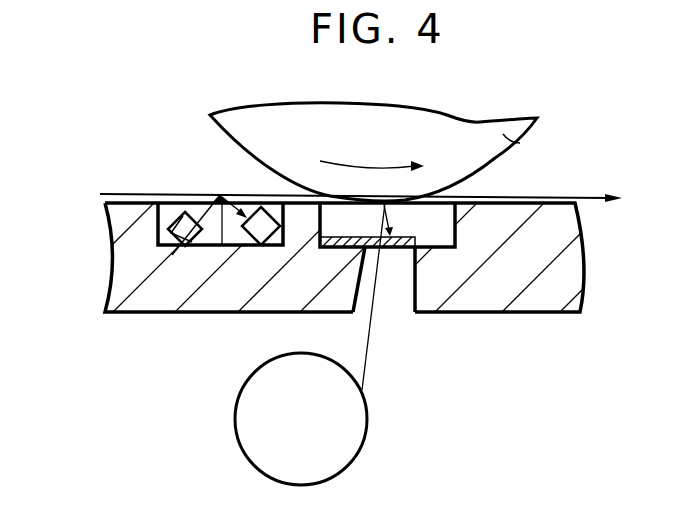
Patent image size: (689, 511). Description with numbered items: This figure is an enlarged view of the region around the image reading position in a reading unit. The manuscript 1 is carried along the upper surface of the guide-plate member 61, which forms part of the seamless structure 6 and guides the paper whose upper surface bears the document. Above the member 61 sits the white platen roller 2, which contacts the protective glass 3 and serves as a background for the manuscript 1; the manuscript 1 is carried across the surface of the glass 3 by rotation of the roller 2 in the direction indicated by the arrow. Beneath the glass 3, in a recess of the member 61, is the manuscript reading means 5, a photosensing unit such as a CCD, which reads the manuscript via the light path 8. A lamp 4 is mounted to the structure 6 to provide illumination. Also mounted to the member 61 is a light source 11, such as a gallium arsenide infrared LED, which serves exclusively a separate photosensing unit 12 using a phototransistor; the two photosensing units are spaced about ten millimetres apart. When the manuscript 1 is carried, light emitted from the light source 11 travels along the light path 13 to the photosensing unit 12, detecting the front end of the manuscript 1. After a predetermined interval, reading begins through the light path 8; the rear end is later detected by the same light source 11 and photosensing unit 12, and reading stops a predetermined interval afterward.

The manuscript 1 is at (560, 197).
The white platen roller 2 is at (530, 138).
The protective glass 3 is at (443, 232).
The lamp 4 is at (352, 423).
The photosensing unit 5 is at (395, 247).
The seamless structure 6 is at (103, 276).
The guide-plate member 61 is at (147, 287).
The light path 8 is at (367, 352).
The light source 11 is at (180, 217).
The photosensing unit 12 is at (250, 238).
The light path 13 is at (203, 208).